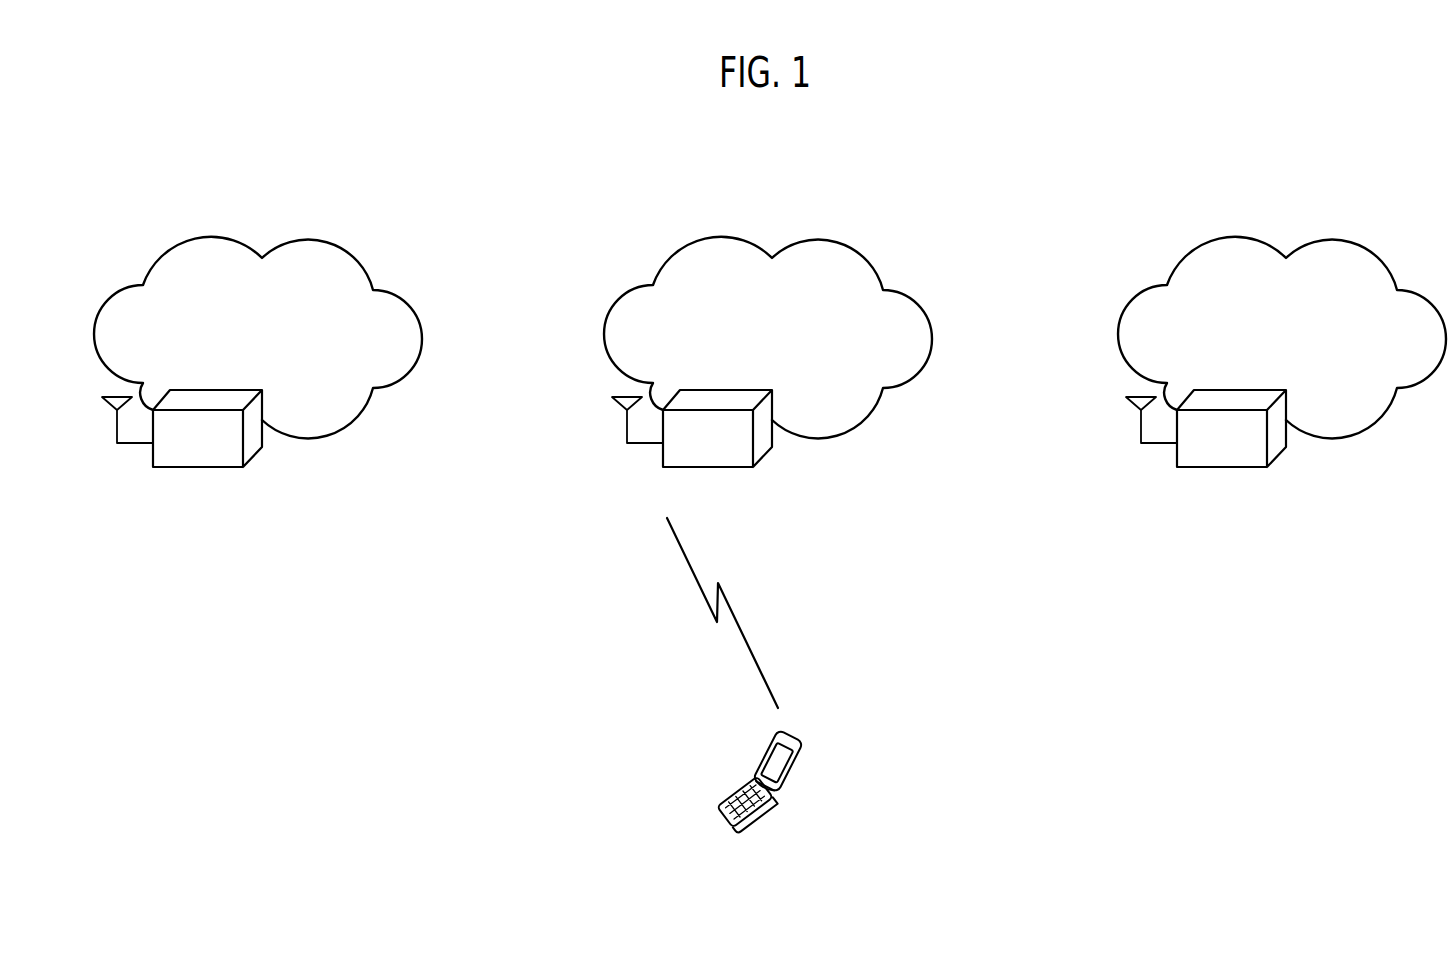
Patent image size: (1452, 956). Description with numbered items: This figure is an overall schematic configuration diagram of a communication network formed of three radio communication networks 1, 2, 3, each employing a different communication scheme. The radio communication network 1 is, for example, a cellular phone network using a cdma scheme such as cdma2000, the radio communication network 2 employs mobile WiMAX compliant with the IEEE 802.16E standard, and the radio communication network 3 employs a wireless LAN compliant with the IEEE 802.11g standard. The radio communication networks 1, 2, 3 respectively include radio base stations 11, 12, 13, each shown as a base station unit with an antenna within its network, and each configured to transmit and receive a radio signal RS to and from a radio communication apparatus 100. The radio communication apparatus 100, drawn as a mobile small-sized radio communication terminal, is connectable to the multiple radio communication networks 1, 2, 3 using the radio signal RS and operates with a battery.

The radio communication network 1 is at (333, 243).
The radio communication network 2 is at (843, 243).
The radio communication network 3 is at (1357, 243).
The radio base station 11 is at (210, 400).
The radio base station 12 is at (720, 400).
The radio base station 13 is at (1234, 400).
The radio signal RS is at (750, 648).
The radio communication apparatus 100 is at (772, 805).